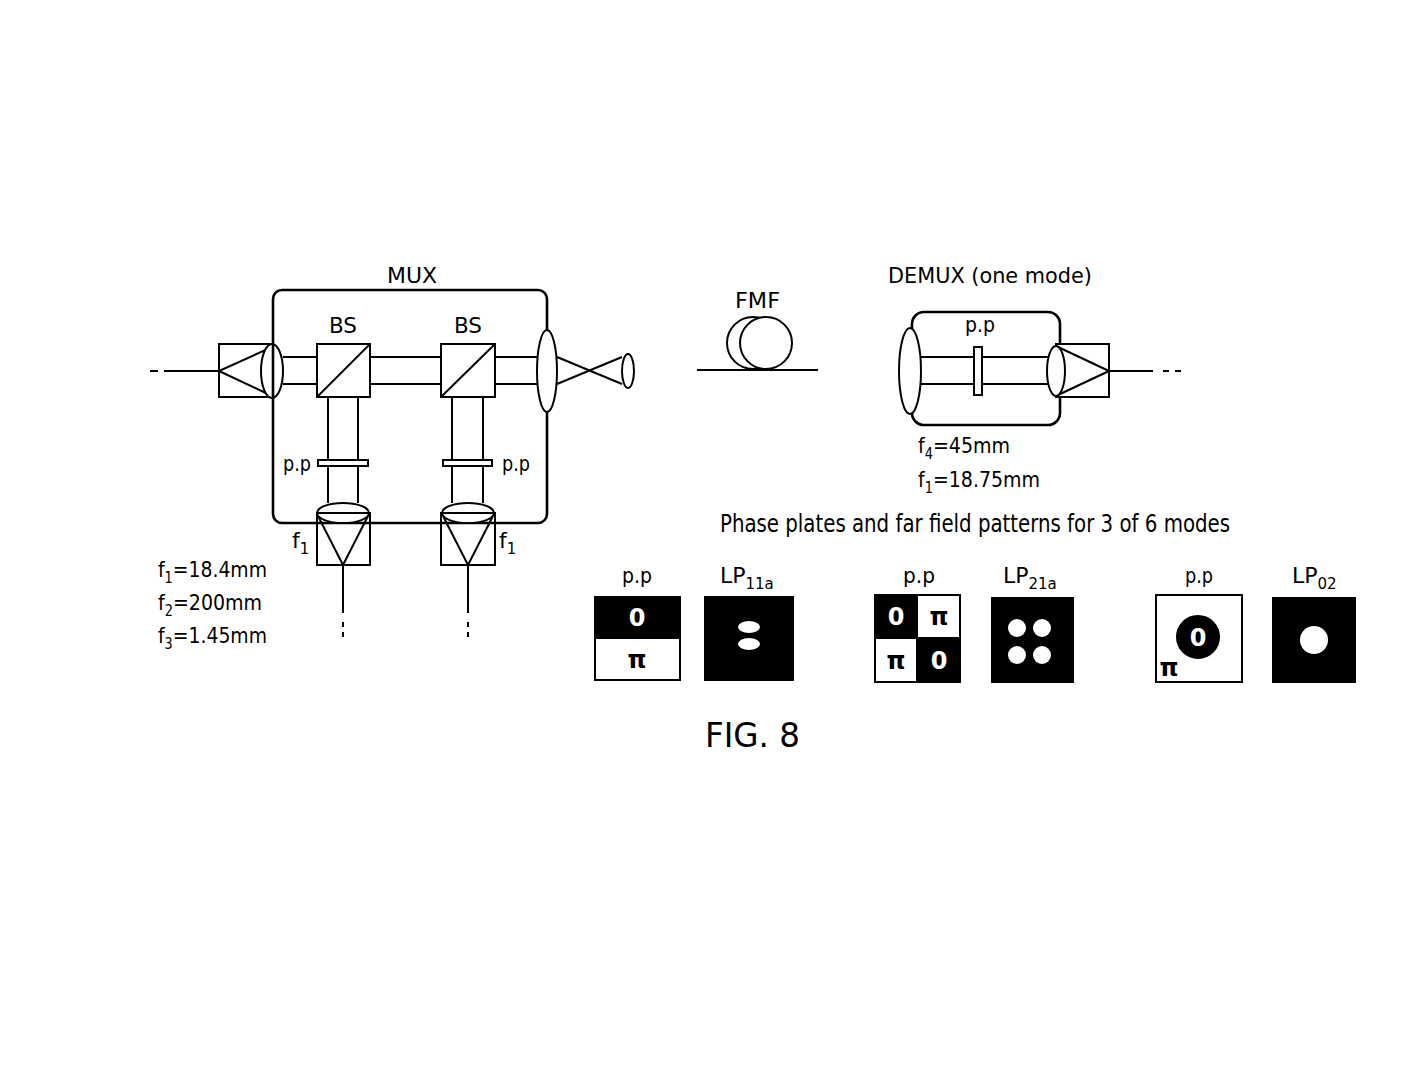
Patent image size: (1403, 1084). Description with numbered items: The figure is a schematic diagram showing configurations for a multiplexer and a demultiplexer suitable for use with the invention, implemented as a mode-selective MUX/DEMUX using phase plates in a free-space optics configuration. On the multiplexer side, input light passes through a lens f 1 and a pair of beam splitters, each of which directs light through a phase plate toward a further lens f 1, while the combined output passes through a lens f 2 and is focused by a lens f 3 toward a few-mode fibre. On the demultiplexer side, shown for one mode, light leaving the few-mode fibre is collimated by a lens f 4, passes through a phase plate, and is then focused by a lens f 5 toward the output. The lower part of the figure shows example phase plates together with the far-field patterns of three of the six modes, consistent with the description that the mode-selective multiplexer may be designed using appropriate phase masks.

The lens f1 (collimator, focal length 18.4 mm) 1 is at (251, 353).
The lens f2 (focal length 200 mm) 2 is at (552, 360).
The lens f3 (focal length 1.45 mm) 3 is at (631, 355).
The lens f4 (demux, focal length 45 mm) 4 is at (902, 359).
The lens f5 (demux collimator) 5 is at (1078, 351).